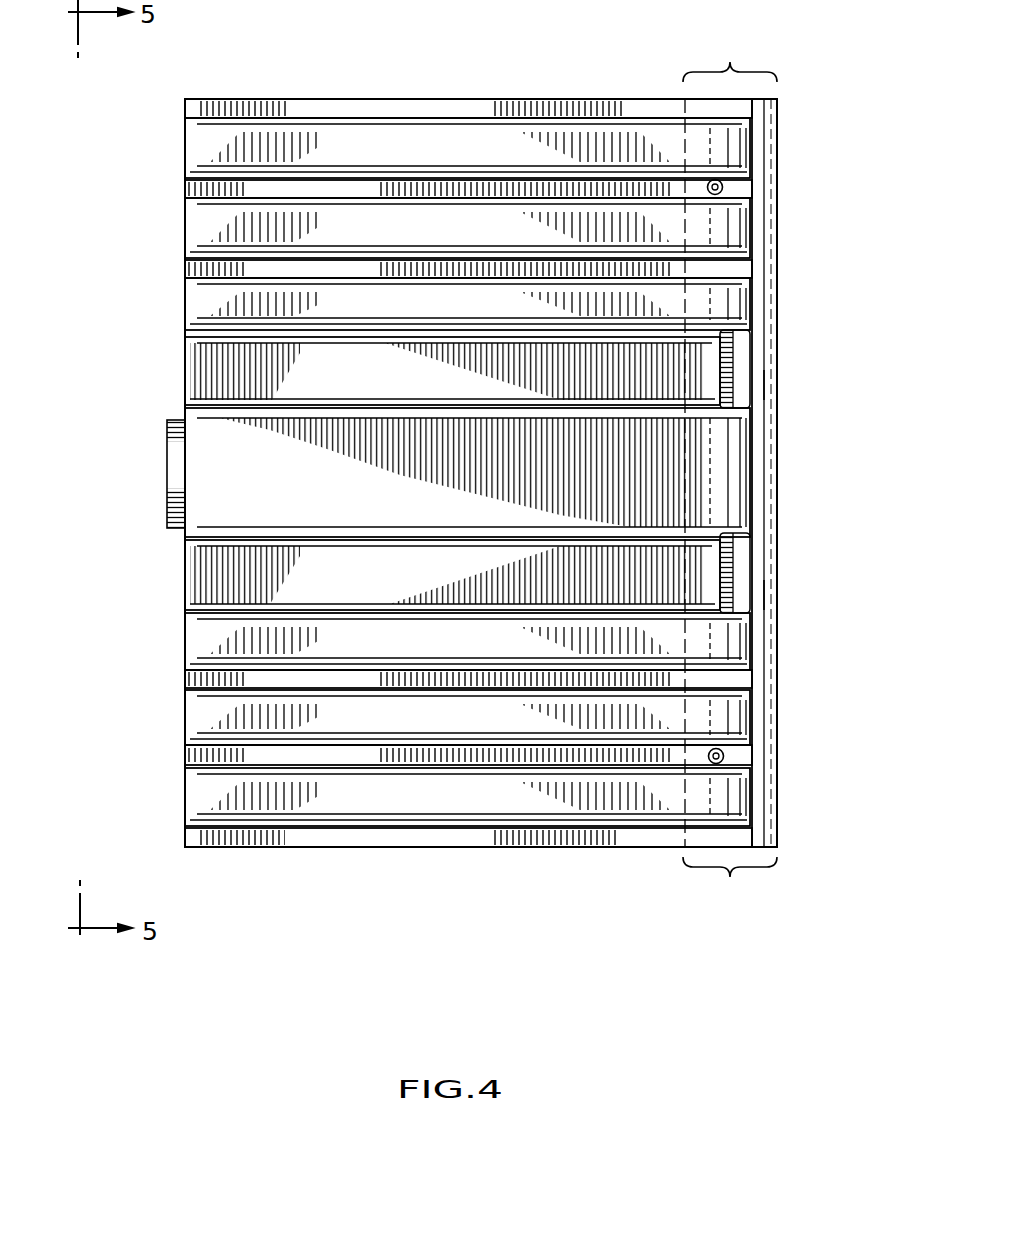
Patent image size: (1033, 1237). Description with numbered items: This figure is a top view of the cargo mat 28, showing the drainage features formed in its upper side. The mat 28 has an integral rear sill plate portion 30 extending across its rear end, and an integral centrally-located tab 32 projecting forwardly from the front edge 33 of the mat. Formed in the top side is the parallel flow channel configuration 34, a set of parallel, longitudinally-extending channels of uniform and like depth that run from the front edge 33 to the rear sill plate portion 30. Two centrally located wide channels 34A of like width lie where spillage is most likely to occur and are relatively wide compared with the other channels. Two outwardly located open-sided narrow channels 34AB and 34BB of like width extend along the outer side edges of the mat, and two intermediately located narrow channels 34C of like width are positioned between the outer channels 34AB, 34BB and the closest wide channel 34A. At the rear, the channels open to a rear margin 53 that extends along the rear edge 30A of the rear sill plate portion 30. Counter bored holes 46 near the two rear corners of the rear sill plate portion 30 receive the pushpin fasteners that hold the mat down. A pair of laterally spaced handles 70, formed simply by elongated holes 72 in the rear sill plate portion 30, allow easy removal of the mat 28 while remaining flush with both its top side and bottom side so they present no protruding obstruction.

The cargo mat 28 is at (372, 892).
The rear sill plate portion 30 is at (730, 470).
The rear edge 30A is at (777, 683).
The tab 32 is at (177, 470).
The front edge 33 is at (188, 715).
The parallel flow channel configuration 34 is at (660, 354).
The wide channels 34A is at (316, 368).
The open-sided narrow channel 34AB is at (452, 840).
The open-sided narrow channel 34BB is at (355, 105).
The narrow channels 34C is at (188, 190).
The counter bored holes 46 is at (723, 187).
The rear margin 53 is at (765, 485).
The handles 70 is at (762, 385).
The elongated holes 72 is at (752, 368).